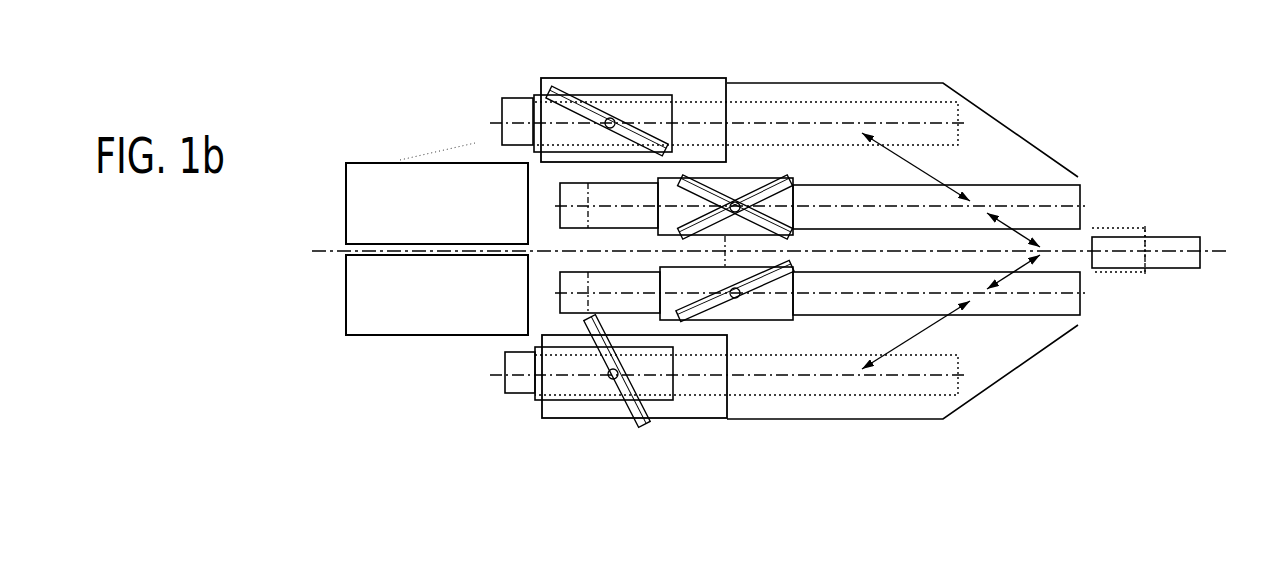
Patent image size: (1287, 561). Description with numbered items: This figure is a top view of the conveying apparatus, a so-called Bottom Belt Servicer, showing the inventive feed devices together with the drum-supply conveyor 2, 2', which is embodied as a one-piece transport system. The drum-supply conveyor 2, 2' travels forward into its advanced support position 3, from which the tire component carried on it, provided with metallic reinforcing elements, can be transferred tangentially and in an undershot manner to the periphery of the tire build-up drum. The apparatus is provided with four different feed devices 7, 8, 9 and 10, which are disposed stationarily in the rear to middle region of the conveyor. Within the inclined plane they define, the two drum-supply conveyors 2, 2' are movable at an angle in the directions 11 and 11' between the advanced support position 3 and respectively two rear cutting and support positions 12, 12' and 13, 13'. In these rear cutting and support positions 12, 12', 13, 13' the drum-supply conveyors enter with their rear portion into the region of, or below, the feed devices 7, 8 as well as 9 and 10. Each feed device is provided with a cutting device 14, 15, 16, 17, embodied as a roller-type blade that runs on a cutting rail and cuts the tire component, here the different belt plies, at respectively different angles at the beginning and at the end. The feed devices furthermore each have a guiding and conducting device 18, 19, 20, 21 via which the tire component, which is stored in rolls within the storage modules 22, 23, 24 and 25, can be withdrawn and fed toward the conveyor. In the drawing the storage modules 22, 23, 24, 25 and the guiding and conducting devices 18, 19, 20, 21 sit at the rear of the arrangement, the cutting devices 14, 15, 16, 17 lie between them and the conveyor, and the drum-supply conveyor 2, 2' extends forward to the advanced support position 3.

The drum-supply conveyor 2 is at (853, 122).
The drum-supply conveyor 2' is at (847, 396).
The advanced support position 3 is at (1077, 258).
The feed device 7 is at (662, 120).
The feed device 8 is at (740, 197).
The feed device 9 is at (653, 383).
The feed device 10 is at (767, 308).
The direction of movement 11 is at (968, 90).
The direction of movement 11' is at (1015, 421).
The rear cutting and support position 12 is at (936, 117).
The rear cutting and support position 12' is at (931, 126).
The rear cutting and support position 13 is at (936, 391).
The rear cutting and support position 13' is at (950, 383).
The cutting device 14 is at (642, 120).
The cutting device 15 is at (700, 190).
The cutting device 16 is at (645, 425).
The cutting device 17 is at (695, 315).
The guiding and conducting device 18 is at (510, 112).
The guiding and conducting device 19 is at (607, 198).
The guiding and conducting device 20 is at (518, 382).
The guiding and conducting device 21 is at (618, 305).
The storage module 22 is at (693, 117).
The storage module 23 is at (397, 178).
The storage module 24 is at (413, 310).
The storage module 25 is at (717, 407).